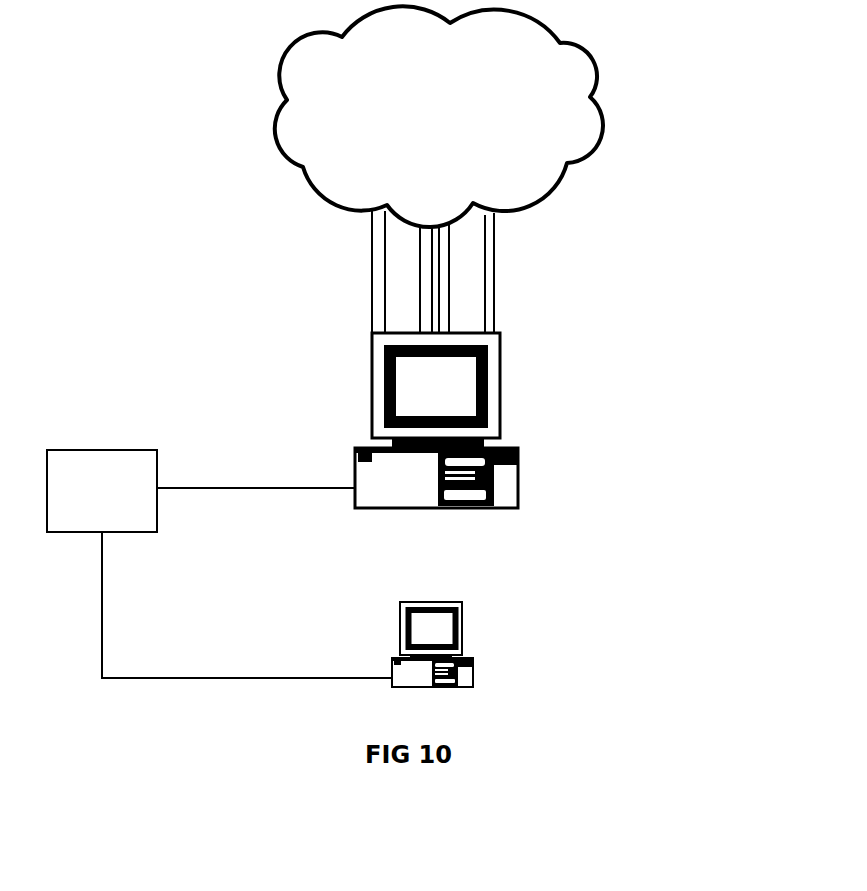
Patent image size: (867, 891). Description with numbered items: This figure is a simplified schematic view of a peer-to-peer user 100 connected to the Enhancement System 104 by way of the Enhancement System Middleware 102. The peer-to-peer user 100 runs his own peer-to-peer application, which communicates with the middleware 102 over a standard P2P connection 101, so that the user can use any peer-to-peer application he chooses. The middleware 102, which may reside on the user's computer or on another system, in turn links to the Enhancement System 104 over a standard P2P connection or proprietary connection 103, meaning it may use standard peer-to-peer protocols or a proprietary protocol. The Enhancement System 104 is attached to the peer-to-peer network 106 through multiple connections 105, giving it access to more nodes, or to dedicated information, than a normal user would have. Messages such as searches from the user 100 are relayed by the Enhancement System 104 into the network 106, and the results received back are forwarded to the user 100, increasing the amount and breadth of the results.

The peer-to-peer user 100 is at (547, 644).
The standard P2P connection 101 is at (248, 605).
The middleware 102 is at (102, 491).
The standard P2P connection or proprietary connection 103 is at (256, 428).
The Enhancement System 104 is at (556, 420).
The multiple connections 105 is at (557, 270).
The peer-to-peer network 106 is at (439, 116).